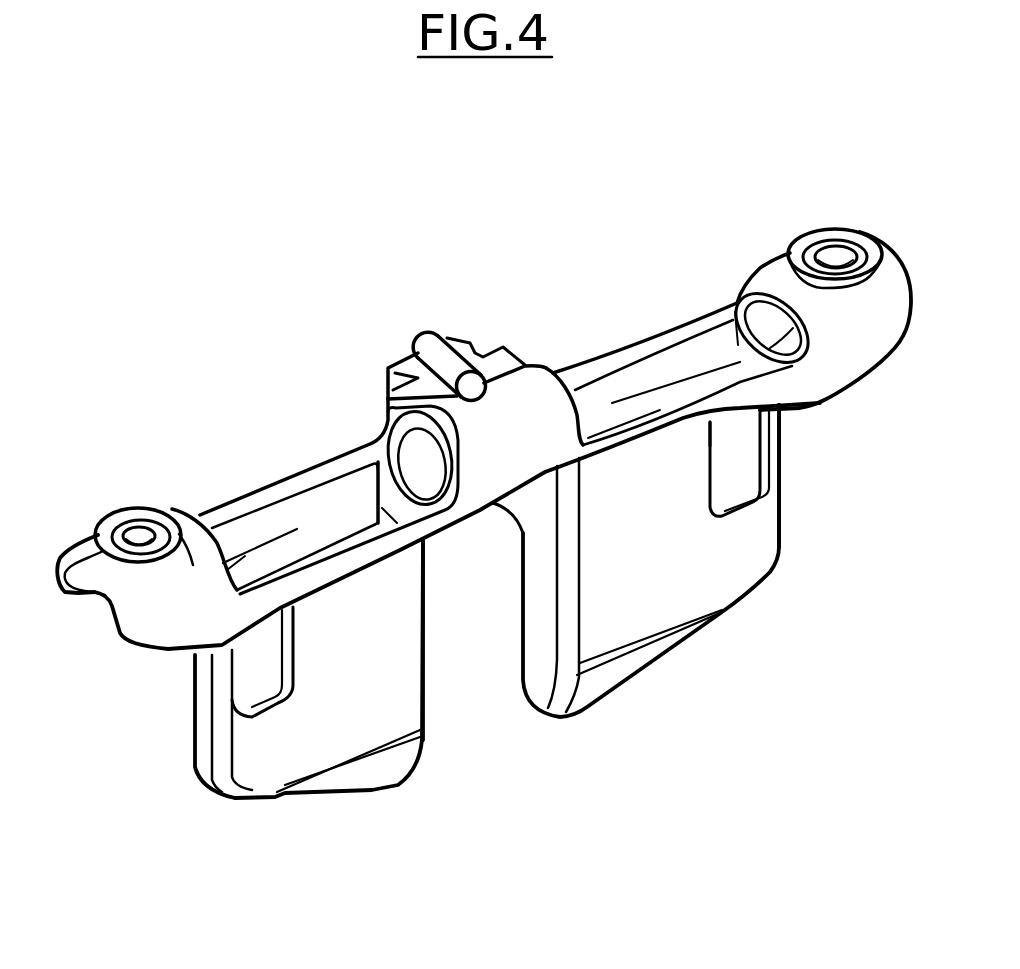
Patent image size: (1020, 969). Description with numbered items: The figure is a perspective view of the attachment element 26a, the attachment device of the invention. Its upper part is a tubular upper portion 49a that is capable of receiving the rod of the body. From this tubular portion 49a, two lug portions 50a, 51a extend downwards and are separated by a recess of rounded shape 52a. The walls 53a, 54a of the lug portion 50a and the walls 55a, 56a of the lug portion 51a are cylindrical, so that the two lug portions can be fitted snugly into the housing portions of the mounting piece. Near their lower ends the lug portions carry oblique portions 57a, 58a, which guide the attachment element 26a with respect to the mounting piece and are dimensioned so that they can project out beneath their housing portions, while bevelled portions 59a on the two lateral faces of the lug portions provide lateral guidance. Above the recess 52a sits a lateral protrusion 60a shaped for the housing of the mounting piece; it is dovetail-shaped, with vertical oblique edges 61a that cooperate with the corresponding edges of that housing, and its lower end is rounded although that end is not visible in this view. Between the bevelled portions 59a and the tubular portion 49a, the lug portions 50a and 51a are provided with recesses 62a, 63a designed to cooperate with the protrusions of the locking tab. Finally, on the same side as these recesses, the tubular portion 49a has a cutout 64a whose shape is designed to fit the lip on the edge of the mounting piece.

The attachment element 26a is at (190, 471).
The tubular upper portion 49a is at (633, 375).
The lug portion 50a is at (310, 730).
The lug portion 51a is at (641, 583).
The recess of rounded shape 52a is at (513, 513).
The wall 53a is at (195, 735).
The wall 54a is at (425, 680).
The wall 55a is at (523, 613).
The wall 56a is at (780, 522).
The oblique portion 57a is at (240, 800).
The oblique portion 58a is at (680, 642).
The bevelled portion 59a is at (380, 767).
The lateral protrusion 60a is at (455, 343).
The vertical oblique edge 61a is at (384, 370).
The recess 62a is at (250, 677).
The recess 63a is at (735, 467).
The cutout 64a is at (703, 437).